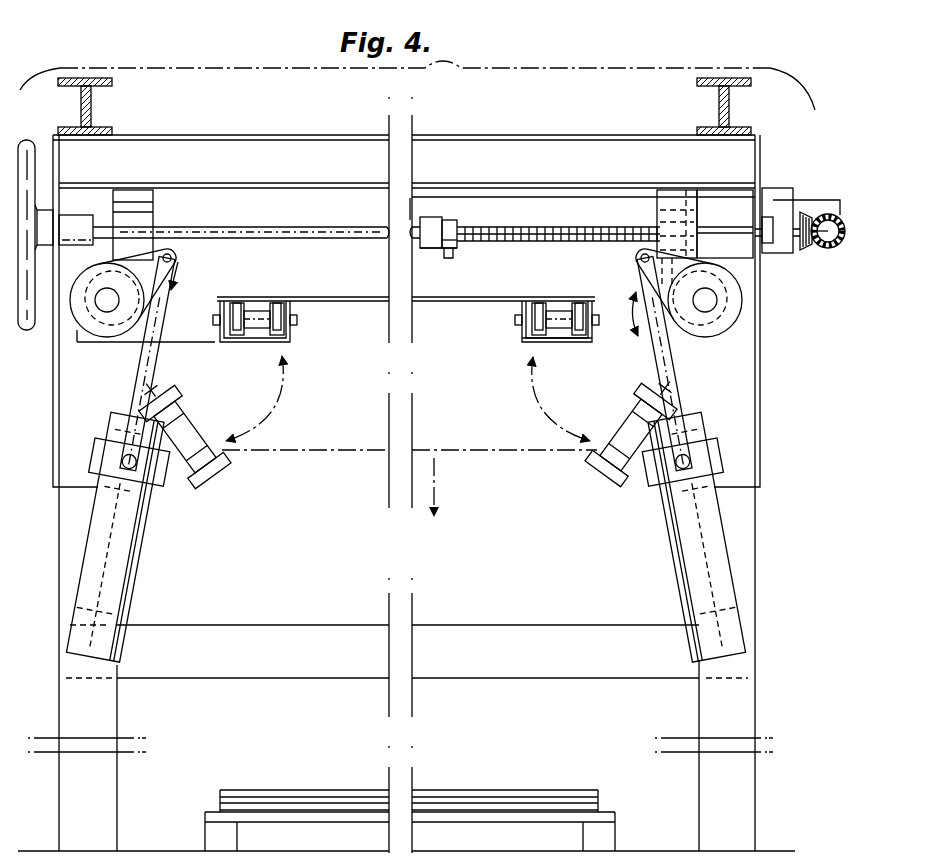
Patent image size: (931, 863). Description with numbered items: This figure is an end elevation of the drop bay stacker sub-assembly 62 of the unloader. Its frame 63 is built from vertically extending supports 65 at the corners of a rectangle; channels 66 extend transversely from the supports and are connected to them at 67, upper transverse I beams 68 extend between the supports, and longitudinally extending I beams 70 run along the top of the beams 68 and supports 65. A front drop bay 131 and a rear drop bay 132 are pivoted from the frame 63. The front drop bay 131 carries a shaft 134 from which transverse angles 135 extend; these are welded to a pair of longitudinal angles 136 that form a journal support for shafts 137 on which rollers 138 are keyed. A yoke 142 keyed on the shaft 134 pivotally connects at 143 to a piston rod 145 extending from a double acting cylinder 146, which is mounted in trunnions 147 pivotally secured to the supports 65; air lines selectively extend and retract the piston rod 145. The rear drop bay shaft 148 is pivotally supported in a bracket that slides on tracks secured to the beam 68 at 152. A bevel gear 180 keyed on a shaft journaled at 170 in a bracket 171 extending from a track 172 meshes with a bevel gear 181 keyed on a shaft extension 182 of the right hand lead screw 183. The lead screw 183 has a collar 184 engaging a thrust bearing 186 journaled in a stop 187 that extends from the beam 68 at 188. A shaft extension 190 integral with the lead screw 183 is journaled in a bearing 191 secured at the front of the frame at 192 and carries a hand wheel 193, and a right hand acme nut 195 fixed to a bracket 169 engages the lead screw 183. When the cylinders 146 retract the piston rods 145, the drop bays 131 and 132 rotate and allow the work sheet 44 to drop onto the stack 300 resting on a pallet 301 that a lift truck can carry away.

The work sheet 44 is at (463, 296).
The drop bay stacker sub-assembly 62 is at (306, 131).
The frame 63 is at (767, 527).
The vertically extending supports 65 is at (414, 755).
The channels 66 is at (408, 651).
The connection of channels to vertical supports 67 is at (694, 679).
The upper transverse I beams 68 is at (407, 168).
The longitudinally extending I beams 70 is at (92, 108).
The front drop bay 131 is at (305, 302).
The rear drop bay 132 is at (625, 340).
The shaft 134 is at (103, 305).
The transverse angles 135 is at (170, 341).
The longitudinal angles 136 is at (230, 342).
The shafts 137 is at (262, 314).
The rollers 138 is at (238, 305).
The yoke 142 is at (155, 278).
The pivotal connection 143 is at (168, 256).
The piston rod 145 is at (148, 392).
The double acting cylinder 146 is at (127, 558).
The trunnions 147 is at (165, 472).
The rear drop bay shaft 148 is at (712, 303).
The track securement 152 is at (547, 187).
The bracket 169 is at (669, 200).
The journal 170 is at (712, 318).
The bracket 171 is at (778, 192).
The track 172 is at (563, 195).
The bevel gear 180 is at (830, 249).
The bevel gear 181 is at (812, 252).
The shaft extension 182 is at (714, 232).
The right hand lead screw 183 is at (548, 232).
The collar 184 is at (450, 240).
The thrust bearing 186 is at (441, 250).
The stop 187 is at (431, 228).
The stop attachment 188 is at (413, 232).
The shaft extension 190 is at (245, 232).
The bearing 191 is at (84, 225).
The bearing securement 192 is at (68, 226).
The hand wheel 193 is at (33, 322).
The right hand acme nut 195 is at (688, 195).
The stack 300 is at (302, 779).
The pallet 301 is at (217, 834).